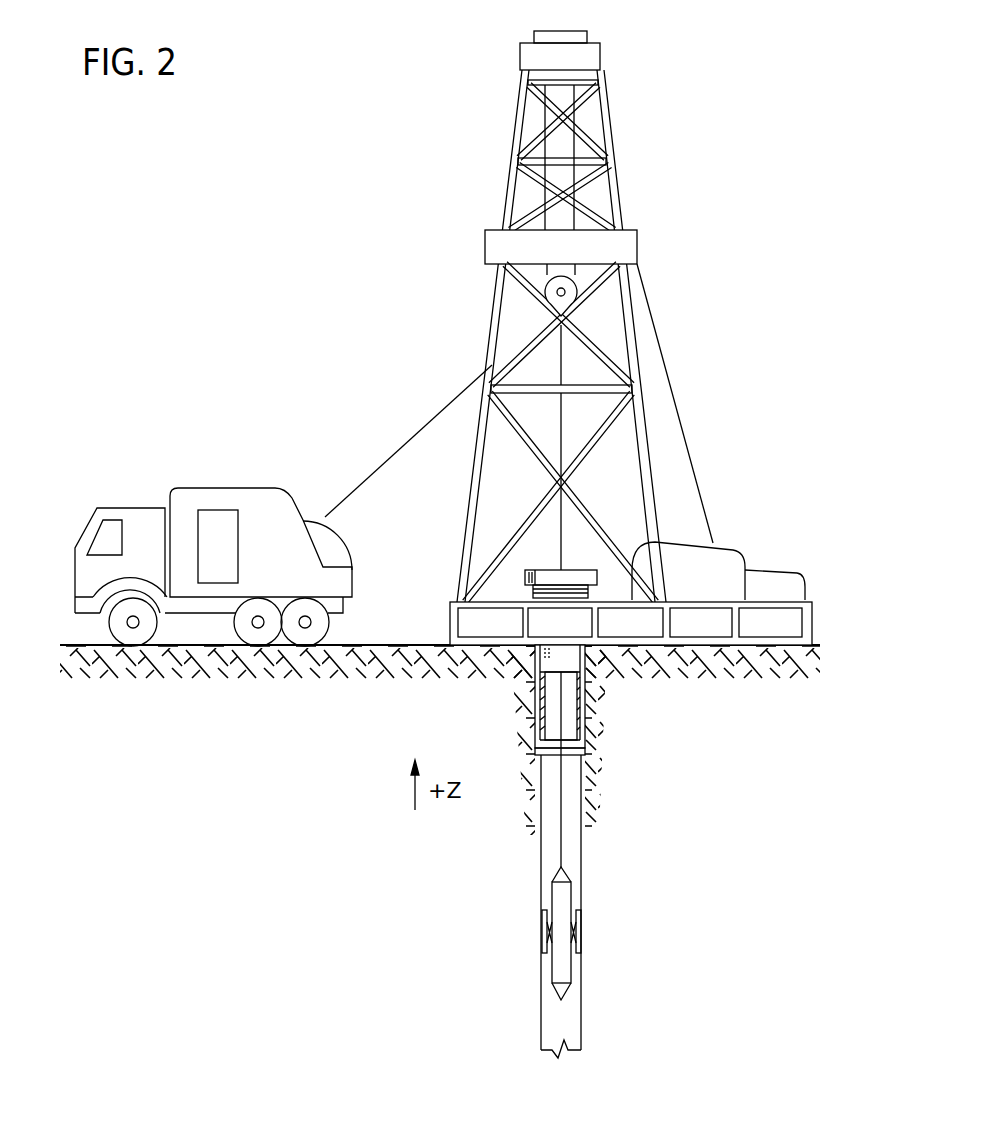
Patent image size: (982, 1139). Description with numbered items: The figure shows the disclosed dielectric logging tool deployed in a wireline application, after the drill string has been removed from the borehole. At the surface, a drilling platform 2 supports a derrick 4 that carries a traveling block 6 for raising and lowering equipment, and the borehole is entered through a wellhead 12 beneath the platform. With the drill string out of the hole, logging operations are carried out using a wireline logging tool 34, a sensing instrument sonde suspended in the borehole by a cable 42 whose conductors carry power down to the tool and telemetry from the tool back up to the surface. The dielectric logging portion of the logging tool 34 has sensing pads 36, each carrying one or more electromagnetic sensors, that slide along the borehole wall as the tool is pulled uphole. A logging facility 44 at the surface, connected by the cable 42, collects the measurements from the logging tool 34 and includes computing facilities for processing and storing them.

The drilling platform 2 is at (812, 618).
The derrick 4 is at (505, 193).
The traveling block 6 is at (549, 289).
The wellhead 12 is at (543, 570).
The wireline logging tool 34 is at (571, 893).
The sensing pads 36 is at (542, 918).
The cable 42 is at (450, 400).
The logging facility 44 is at (198, 488).